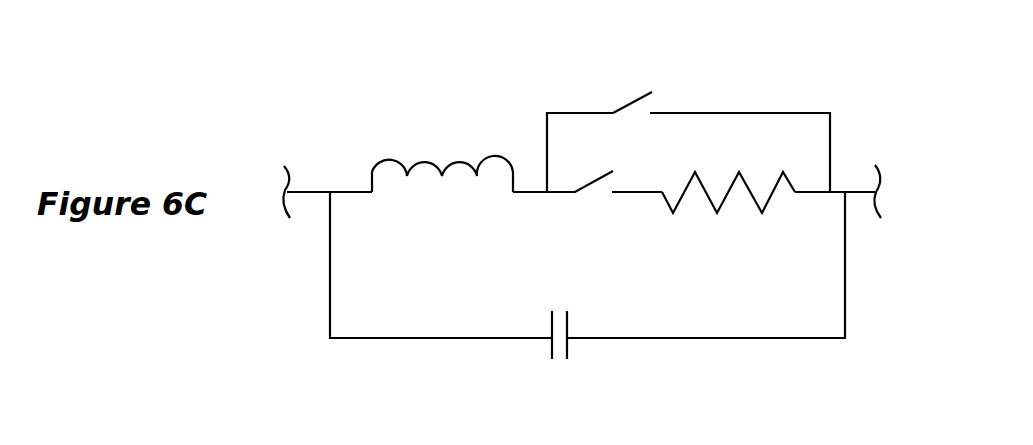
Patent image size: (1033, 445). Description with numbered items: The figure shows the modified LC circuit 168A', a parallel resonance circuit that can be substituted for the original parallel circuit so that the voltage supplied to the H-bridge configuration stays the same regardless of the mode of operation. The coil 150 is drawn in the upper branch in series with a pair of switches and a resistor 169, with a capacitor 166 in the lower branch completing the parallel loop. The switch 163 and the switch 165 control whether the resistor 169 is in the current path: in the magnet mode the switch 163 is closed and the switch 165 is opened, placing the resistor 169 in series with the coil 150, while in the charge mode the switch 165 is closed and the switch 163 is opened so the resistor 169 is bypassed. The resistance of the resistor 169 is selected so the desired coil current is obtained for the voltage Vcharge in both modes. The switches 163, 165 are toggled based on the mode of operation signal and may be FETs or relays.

The coil 150 is at (388, 152).
The switch 165 is at (625, 88).
The switch 163 is at (592, 217).
The resistor 169 is at (730, 230).
The capacitor 166 is at (565, 367).
The modified LC circuit 168A' is at (610, 181).